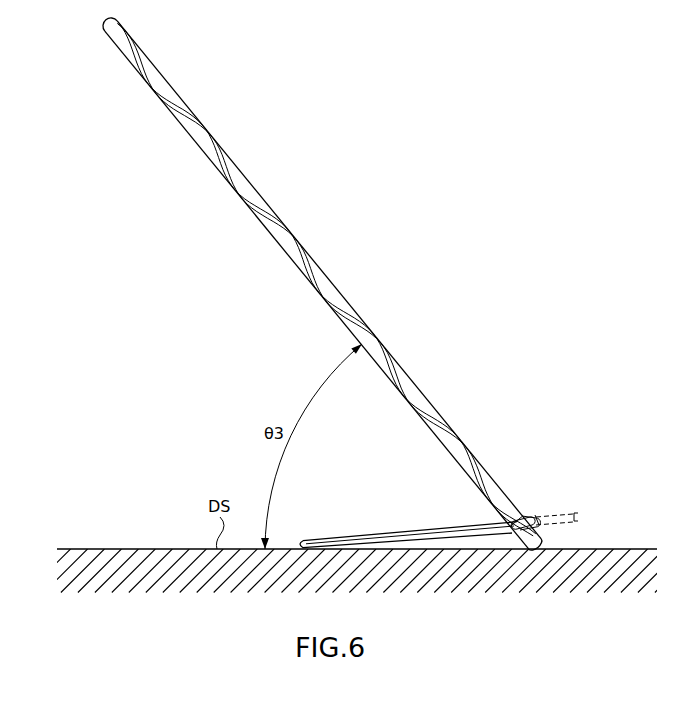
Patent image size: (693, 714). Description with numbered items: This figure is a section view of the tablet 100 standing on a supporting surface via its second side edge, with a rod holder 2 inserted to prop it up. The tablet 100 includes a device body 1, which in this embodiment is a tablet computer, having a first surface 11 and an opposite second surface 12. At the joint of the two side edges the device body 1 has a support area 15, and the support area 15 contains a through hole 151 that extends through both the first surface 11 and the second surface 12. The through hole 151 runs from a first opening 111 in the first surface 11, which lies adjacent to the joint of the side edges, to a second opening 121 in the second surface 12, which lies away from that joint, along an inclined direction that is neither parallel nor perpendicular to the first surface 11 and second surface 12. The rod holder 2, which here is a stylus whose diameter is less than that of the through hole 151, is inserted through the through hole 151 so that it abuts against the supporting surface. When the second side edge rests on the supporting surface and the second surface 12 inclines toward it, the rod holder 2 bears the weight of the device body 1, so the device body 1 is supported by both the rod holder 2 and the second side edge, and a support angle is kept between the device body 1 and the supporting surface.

The tablet 100 is at (468, 132).
The device body 1 is at (369, 233).
The first surface 11 is at (297, 241).
The second surface 12 is at (292, 263).
The second opening 121 is at (503, 536).
The support area 15 is at (534, 511).
The through hole 151 is at (521, 517).
The first opening 111 is at (530, 517).
The rod holder 2 is at (579, 518).